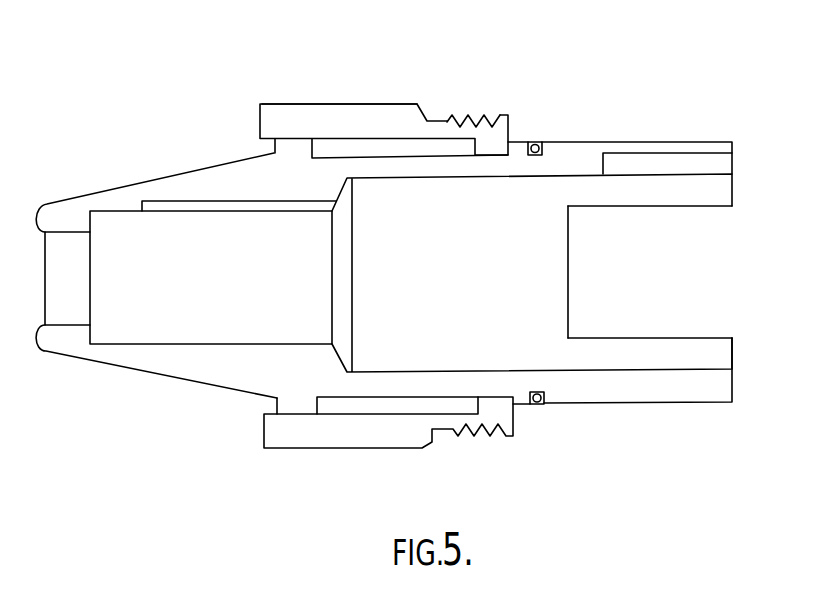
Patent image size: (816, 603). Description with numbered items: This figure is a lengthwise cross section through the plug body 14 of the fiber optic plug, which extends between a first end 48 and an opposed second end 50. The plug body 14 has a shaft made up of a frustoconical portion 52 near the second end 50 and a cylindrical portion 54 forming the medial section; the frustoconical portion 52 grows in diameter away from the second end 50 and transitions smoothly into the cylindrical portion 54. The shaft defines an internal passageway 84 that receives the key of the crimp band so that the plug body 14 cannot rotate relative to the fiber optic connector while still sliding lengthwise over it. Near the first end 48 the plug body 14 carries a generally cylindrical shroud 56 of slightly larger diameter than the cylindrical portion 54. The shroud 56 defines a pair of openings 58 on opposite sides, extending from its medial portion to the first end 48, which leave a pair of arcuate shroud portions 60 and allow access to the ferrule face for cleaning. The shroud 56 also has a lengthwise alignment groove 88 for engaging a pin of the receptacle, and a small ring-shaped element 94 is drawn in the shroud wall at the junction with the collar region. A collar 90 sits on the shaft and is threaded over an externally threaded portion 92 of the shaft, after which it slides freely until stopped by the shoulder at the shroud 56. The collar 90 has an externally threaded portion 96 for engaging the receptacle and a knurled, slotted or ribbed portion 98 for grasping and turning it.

The plug body 14 is at (467, 88).
The first end 48 is at (735, 373).
The second end 50 is at (38, 347).
The frustoconical portion 52 is at (192, 368).
The cylindrical portion 54 is at (475, 387).
The shroud 56 is at (602, 141).
The openings 58 is at (702, 273).
The arcuate shroud portions 60 is at (715, 188).
The passageway 84 is at (186, 201).
The groove 88 is at (673, 162).
The collar 90 is at (365, 122).
The externally threaded portion 92 is at (292, 150).
The o-ring seal 94 is at (493, 153).
The externally threaded portion 96 is at (477, 118).
The portion 98 is at (337, 110).